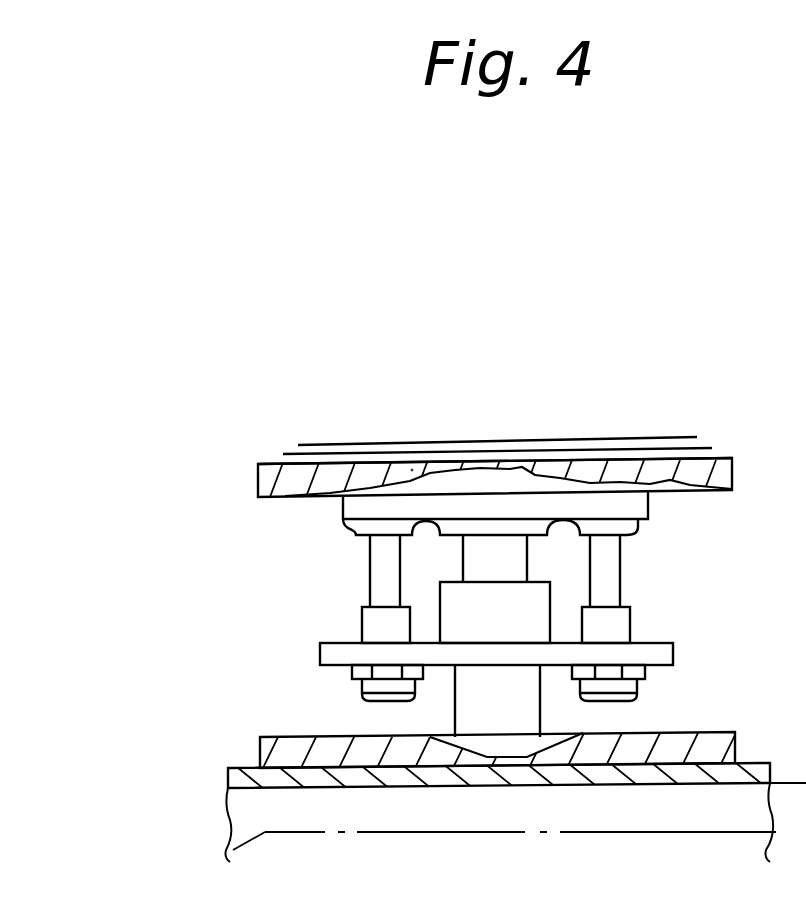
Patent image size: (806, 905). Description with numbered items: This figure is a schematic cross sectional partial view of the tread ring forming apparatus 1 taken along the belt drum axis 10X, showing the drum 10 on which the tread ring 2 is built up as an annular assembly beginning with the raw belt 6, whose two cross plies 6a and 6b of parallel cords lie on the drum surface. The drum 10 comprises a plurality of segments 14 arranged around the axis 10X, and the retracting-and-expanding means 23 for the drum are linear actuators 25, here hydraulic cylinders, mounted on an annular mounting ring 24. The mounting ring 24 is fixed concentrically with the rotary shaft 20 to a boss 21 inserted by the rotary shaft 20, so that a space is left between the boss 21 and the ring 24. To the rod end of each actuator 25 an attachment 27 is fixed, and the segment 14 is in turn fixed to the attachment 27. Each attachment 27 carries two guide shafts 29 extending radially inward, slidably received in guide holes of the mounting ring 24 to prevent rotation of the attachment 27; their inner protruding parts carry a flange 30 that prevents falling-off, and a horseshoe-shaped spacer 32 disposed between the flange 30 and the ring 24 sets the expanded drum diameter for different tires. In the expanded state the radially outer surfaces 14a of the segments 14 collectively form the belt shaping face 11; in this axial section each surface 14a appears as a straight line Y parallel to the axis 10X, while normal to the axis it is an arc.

The tread ring forming apparatus 1 is at (470, 343).
The tread ring 2 is at (805, 748).
The raw belt 6 is at (635, 348).
The cross ply 6a is at (572, 448).
The cross ply 6b is at (505, 437).
The belt drum 10 is at (236, 527).
The drum axis 10X is at (228, 855).
The belt shaping face 11 is at (352, 463).
The segment 14 is at (245, 488).
The radially outer surface of segment 14a is at (283, 463).
The rotary shaft 20 is at (228, 782).
The boss 21 is at (260, 745).
The retracting-and-expanding means 23 is at (312, 609).
The annular mounting ring 24 is at (673, 650).
The linear actuator 25 is at (553, 600).
The attachment 27 is at (648, 511).
The guide shaft 29 is at (370, 566).
The flange 30 is at (638, 685).
The horseshoe-shaped spacer 32 is at (650, 668).
The straight line Y is at (412, 468).